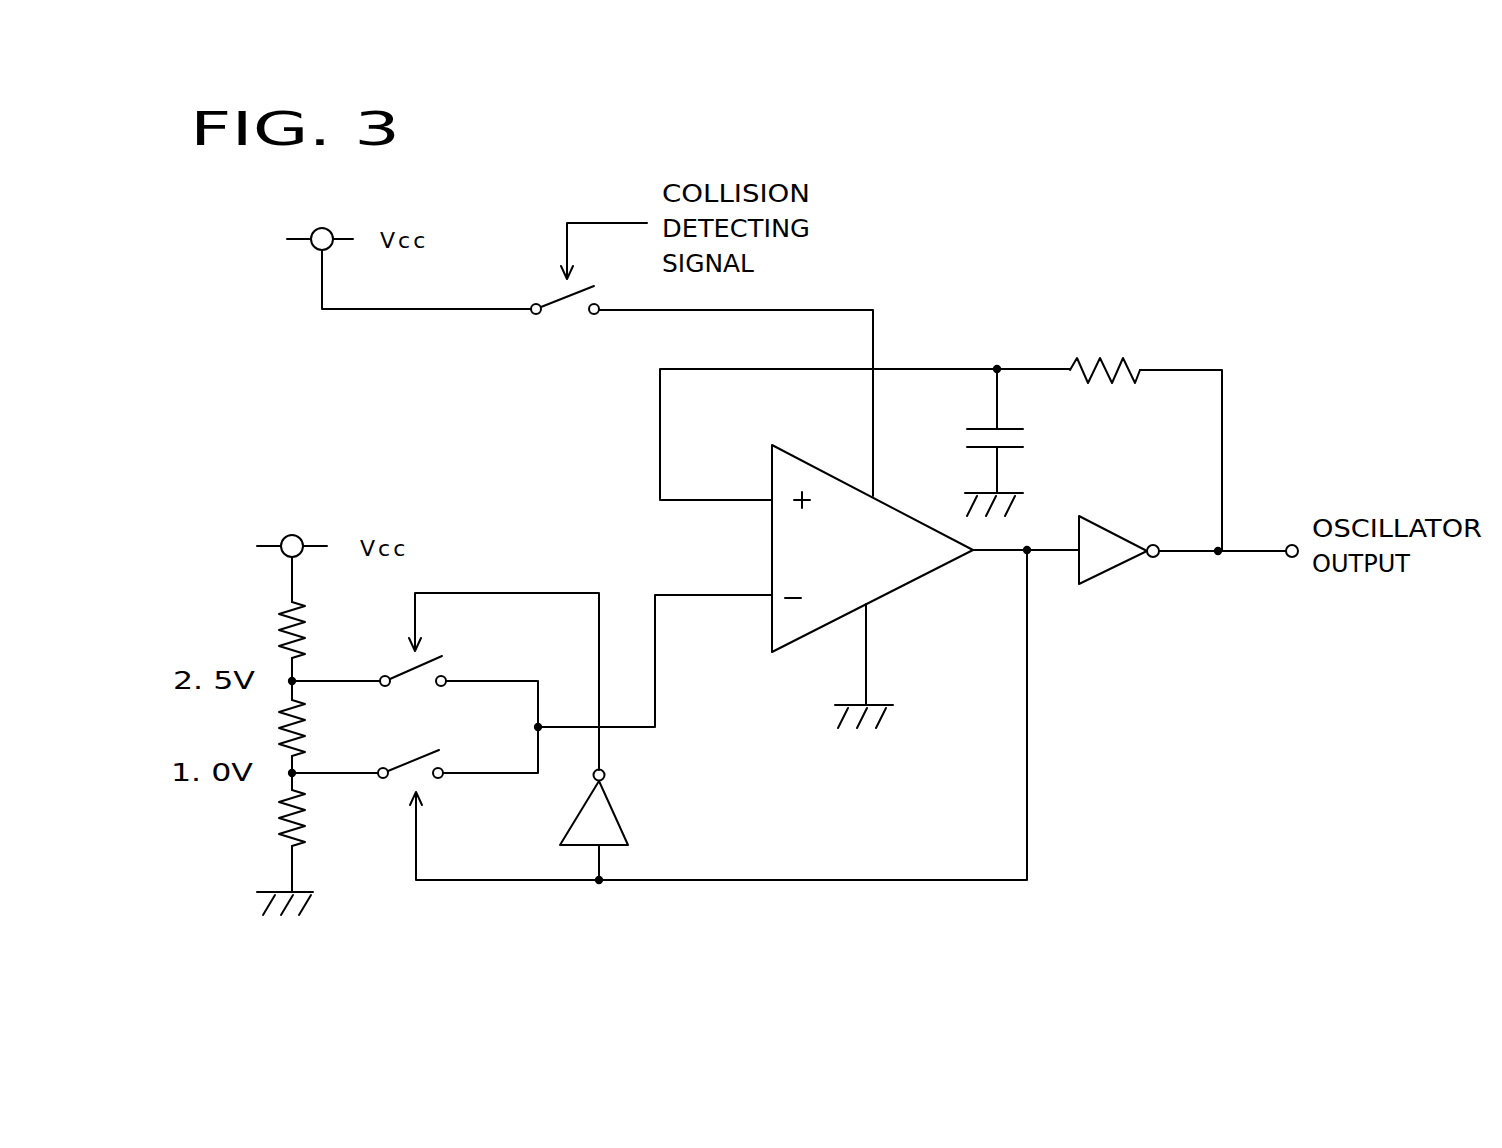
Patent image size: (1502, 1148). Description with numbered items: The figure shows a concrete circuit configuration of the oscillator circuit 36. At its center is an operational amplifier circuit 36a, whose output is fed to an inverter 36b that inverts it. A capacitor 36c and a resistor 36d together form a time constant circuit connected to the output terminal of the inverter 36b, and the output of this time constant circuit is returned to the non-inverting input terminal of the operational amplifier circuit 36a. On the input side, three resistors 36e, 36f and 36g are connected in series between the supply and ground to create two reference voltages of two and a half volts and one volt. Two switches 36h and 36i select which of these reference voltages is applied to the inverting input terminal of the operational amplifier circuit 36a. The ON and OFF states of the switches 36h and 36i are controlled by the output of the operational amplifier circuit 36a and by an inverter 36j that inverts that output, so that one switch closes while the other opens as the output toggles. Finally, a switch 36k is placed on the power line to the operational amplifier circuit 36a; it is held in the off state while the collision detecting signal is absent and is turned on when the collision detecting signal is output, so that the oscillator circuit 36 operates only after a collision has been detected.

The oscillator circuit 36 is at (1032, 300).
The operational amplifier circuit 36a is at (913, 585).
The inverter 36b is at (1120, 565).
The capacitor 36c is at (1040, 437).
The resistor 36d is at (1112, 353).
The resistor 36e is at (307, 635).
The resistor 36f is at (307, 735).
The resistor 36g is at (307, 815).
The switch 36h is at (443, 667).
The switch 36i is at (440, 762).
The inverter 36j is at (615, 810).
The switch 36k is at (567, 322).